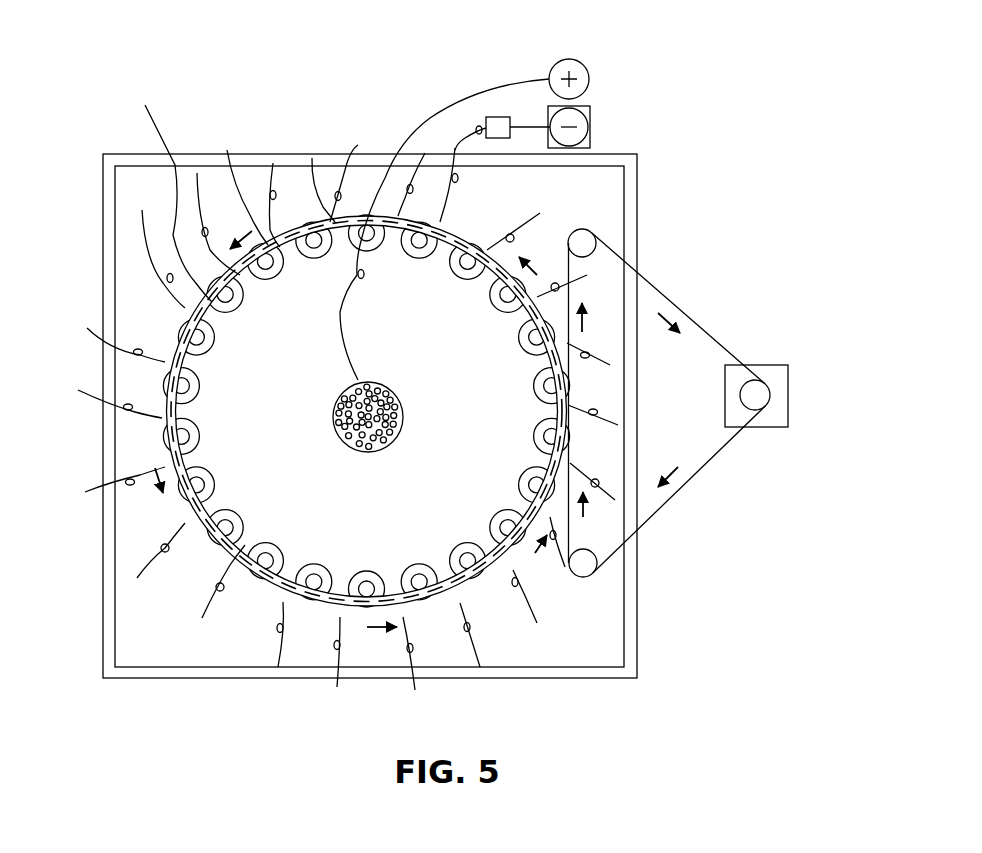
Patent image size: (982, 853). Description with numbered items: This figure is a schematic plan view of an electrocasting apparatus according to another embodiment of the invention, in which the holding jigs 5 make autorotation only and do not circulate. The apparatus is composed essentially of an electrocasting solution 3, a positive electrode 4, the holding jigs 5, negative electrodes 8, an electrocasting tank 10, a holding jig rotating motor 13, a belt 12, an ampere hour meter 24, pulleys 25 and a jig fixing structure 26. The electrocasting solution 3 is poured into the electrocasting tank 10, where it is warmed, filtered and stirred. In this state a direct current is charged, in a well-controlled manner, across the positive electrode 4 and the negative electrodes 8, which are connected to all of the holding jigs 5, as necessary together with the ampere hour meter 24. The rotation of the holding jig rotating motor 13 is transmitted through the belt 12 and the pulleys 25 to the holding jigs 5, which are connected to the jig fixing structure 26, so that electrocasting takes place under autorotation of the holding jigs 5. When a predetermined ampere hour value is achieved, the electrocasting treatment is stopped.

The electrocasting solution 3 is at (612, 184).
The positive electrode 4 is at (393, 389).
The holding jig 5 is at (312, 158).
The negative electrode 8 is at (455, 148).
The electrocasting tank 10 is at (613, 154).
The belt 12 is at (683, 308).
The holding jig rotating motor 13 is at (767, 374).
The ampere hour meter 24 is at (498, 117).
The pulley 25 is at (588, 240).
The jig fixing structure 26 is at (227, 150).